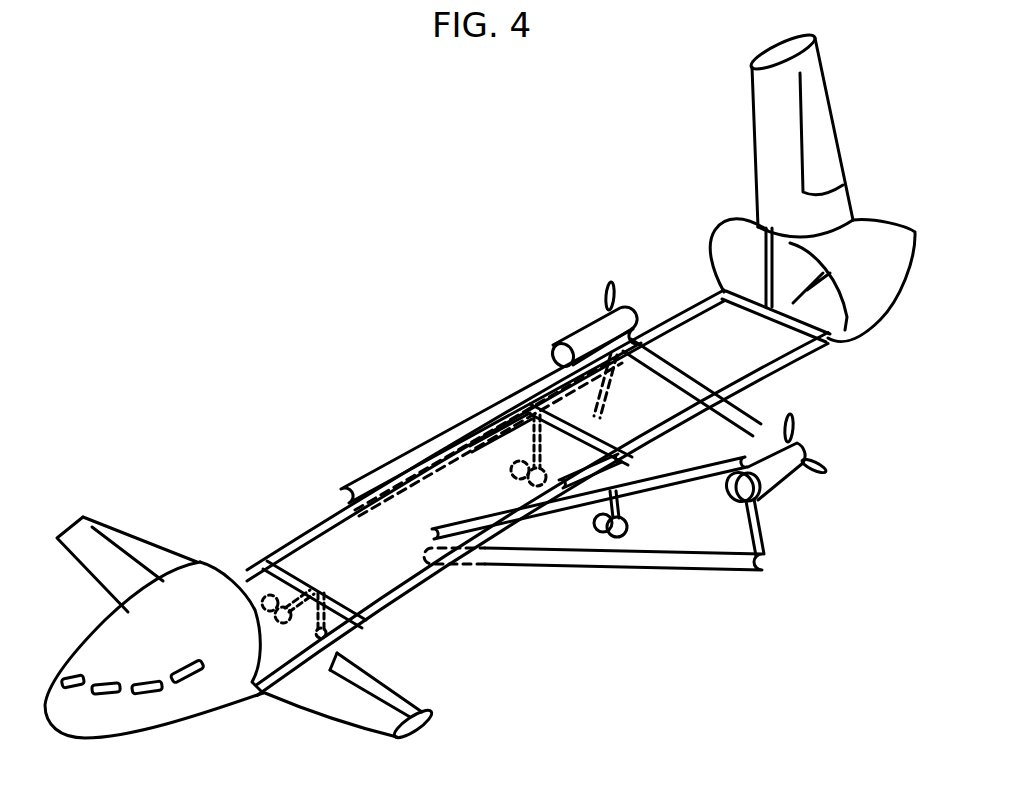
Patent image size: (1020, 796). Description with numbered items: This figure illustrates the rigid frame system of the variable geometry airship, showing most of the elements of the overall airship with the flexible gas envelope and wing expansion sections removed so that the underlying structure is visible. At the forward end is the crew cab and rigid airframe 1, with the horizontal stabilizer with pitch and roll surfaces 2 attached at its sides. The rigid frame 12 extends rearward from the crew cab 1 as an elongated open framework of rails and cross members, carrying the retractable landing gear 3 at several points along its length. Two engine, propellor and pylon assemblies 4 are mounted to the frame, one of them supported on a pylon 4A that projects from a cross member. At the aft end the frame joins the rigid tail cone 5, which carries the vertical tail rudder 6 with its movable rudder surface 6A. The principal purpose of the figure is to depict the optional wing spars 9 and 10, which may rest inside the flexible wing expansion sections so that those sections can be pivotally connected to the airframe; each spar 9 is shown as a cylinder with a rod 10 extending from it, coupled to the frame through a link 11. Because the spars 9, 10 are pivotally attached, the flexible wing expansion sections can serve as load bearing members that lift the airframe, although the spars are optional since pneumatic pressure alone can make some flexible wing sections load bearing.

The crew cab and rigid airframe 1 is at (73, 742).
The horizontal stabilizer with pitch and roll surfaces 2 is at (102, 575).
The retractable landing gear 3 is at (330, 617).
The engine, propellor and pylon assembly 4 is at (583, 333).
The engine mount pylon 4A is at (747, 418).
The rigid tail cone 5 is at (893, 278).
The vertical tail rudder 6 is at (750, 122).
The rudder 6A is at (825, 128).
The wing spar 9 is at (410, 447).
The wing spar 10 is at (492, 407).
The link 11 is at (617, 415).
The frame 12 is at (302, 528).